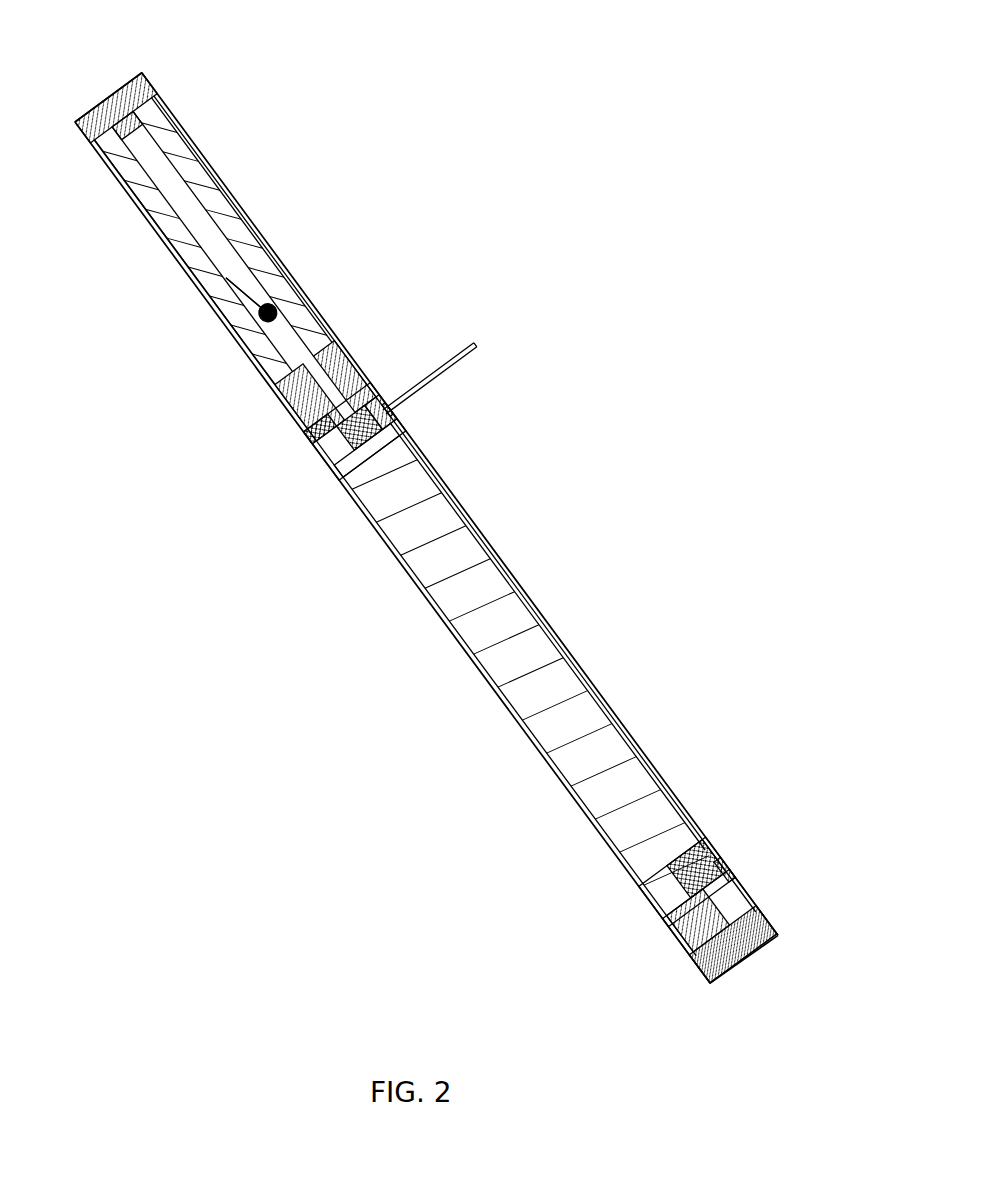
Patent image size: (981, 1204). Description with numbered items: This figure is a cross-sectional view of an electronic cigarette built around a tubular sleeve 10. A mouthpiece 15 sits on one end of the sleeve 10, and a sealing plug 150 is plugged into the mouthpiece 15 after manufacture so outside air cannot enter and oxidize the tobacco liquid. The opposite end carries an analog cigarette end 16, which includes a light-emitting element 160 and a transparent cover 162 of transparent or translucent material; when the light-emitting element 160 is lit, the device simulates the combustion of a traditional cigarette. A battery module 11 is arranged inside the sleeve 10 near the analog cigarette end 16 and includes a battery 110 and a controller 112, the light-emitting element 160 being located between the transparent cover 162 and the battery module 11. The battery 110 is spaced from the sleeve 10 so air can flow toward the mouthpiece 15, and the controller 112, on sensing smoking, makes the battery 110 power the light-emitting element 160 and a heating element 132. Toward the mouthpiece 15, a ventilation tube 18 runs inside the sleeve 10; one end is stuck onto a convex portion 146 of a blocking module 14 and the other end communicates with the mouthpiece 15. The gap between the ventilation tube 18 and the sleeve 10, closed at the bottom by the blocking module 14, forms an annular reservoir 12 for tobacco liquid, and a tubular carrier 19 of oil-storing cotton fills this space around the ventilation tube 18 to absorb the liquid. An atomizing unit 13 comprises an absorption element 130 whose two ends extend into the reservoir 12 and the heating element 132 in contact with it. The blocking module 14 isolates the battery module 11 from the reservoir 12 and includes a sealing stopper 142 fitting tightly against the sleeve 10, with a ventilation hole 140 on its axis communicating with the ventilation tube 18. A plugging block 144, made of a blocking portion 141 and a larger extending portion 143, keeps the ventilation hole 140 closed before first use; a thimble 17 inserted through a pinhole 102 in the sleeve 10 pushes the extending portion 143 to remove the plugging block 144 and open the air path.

The sleeve 10 is at (478, 522).
The battery module 11 is at (732, 763).
The battery 110 is at (680, 840).
The controller 112 is at (722, 871).
The reservoir 12 is at (190, 131).
The atomizing unit 13 is at (140, 322).
The absorption element 130 is at (233, 340).
The heating element 132 is at (217, 313).
The blocking module 14 is at (205, 472).
The ventilation hole 140 is at (290, 391).
The blocking portion 141 is at (312, 453).
The sealing stopper 142 is at (297, 433).
The extending portion 143 is at (352, 456).
The plugging block 144 is at (268, 512).
The convex portion 146 is at (328, 333).
The mouthpiece 15 is at (116, 112).
The sealing plug 150 is at (82, 128).
The analog cigarette end 16 is at (657, 1037).
The light-emitting element 160 is at (672, 935).
The transparent cover 162 is at (710, 985).
The thimble 17 is at (445, 392).
The ventilation tube 18 is at (170, 216).
The carrier 19 is at (128, 184).
The pinhole 102 is at (390, 392).